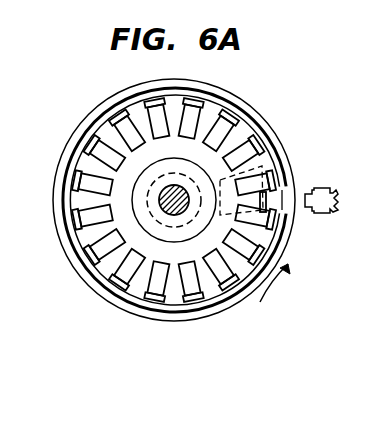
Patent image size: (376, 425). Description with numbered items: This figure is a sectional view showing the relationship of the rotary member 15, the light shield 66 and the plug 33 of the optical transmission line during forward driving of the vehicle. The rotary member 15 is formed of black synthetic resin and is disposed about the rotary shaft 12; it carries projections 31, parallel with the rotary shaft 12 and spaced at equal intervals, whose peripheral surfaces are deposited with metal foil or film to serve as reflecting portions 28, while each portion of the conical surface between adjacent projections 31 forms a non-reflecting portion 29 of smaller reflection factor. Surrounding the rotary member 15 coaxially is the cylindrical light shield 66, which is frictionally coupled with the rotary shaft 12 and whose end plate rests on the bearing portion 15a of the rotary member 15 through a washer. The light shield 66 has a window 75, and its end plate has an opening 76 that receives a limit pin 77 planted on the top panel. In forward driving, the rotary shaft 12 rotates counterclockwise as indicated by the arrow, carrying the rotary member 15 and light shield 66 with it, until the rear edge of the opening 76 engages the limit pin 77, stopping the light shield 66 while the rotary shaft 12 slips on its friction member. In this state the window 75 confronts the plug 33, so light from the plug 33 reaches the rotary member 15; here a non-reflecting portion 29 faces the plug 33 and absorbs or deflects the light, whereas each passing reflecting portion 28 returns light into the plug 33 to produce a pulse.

The light shield 66 is at (253, 112).
The rotary member 15 is at (150, 311).
The bearing portion 15a is at (153, 222).
The rotary shaft 12 is at (179, 213).
The non-reflecting portion 29 is at (176, 288).
The projection 31 is at (214, 287).
The reflecting portion 28 is at (226, 283).
The opening 76 is at (262, 166).
The limit pin 77 is at (266, 200).
The window 75 is at (289, 208).
The plug 33 is at (330, 212).